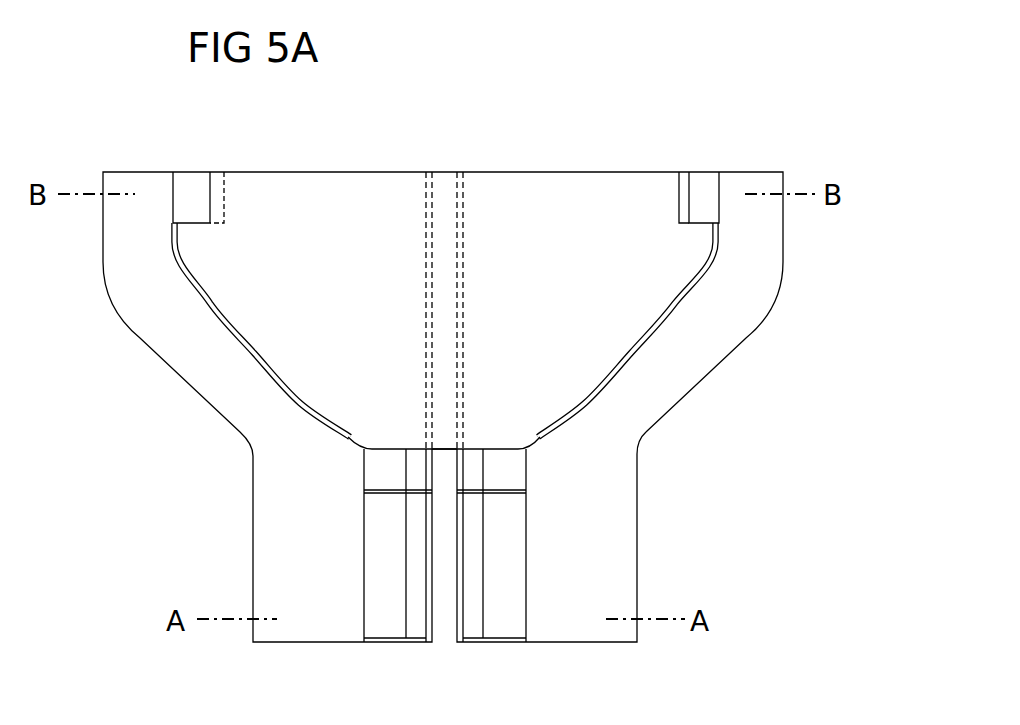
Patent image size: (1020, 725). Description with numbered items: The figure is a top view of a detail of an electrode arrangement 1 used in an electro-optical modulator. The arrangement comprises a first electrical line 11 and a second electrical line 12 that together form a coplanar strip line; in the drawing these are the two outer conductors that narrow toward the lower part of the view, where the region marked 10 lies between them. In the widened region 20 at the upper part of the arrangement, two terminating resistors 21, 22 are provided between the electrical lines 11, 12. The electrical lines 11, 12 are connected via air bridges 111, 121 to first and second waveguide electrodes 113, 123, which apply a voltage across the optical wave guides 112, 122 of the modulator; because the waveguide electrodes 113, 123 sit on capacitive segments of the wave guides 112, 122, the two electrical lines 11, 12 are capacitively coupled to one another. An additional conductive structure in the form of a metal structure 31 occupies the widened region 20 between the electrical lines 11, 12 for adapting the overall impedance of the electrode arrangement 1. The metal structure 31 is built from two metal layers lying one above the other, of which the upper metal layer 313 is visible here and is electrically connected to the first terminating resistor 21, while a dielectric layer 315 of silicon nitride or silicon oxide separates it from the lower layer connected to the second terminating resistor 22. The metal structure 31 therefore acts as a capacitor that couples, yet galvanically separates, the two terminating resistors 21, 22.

The electrode arrangement 1 is at (797, 137).
The base body 10 is at (667, 523).
The first electrical line 11 is at (222, 555).
The second electrical line 12 is at (737, 394).
The widened region 20 is at (796, 272).
The first terminating resistor 21 is at (185, 185).
The second terminating resistor 22 is at (706, 186).
The metal structure 31 is at (562, 193).
The upper metal layer 313 is at (328, 190).
The dielectric layer 315 is at (683, 188).
The air bridge 111 is at (365, 492).
The optical wave guide 112 is at (425, 468).
The first waveguide electrode 113 is at (427, 563).
The air bridge 121 is at (492, 494).
The optical wave guide 122 is at (463, 469).
The second waveguide electrode 123 is at (458, 559).